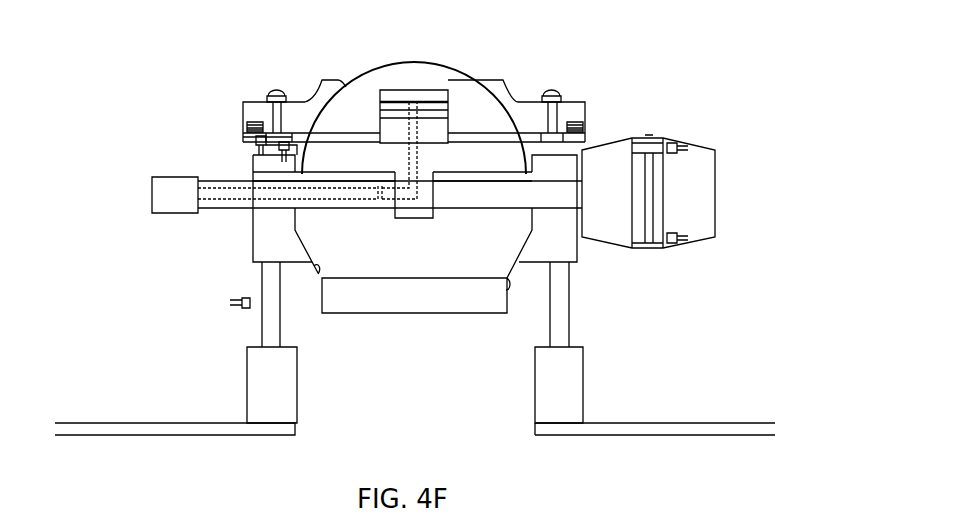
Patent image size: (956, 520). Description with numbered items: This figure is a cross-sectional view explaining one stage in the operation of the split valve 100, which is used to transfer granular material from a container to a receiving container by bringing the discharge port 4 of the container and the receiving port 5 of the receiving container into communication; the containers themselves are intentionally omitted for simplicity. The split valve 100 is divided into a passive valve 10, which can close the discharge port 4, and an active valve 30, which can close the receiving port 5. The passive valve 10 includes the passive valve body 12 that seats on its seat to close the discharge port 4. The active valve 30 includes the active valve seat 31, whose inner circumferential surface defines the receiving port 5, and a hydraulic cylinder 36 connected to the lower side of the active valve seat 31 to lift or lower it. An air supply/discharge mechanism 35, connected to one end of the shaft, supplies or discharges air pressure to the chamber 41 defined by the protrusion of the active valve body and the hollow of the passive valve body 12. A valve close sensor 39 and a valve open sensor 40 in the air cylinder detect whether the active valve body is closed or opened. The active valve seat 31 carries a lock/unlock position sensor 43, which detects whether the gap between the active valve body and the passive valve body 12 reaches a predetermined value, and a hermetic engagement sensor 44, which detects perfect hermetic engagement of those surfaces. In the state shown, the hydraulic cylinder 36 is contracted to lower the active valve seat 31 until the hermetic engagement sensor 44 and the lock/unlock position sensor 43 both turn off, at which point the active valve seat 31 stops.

The split valve 100 is at (692, 78).
The passive valve 10 is at (453, 112).
The discharge port 4 is at (338, 82).
The passive valve body 12 is at (515, 106).
The chamber 41 is at (438, 95).
The lock/unlock position sensor 43 is at (257, 141).
The hermetic engagement sensor 44 is at (280, 147).
The active valve seat 31 is at (565, 242).
The receiving port 5 is at (318, 280).
The air supply/discharge mechanism 35 is at (152, 192).
The active valve 30 is at (669, 169).
The valve close sensor 39 is at (677, 153).
The valve open sensor 40 is at (677, 236).
The hydraulic cylinder 36 is at (262, 398).